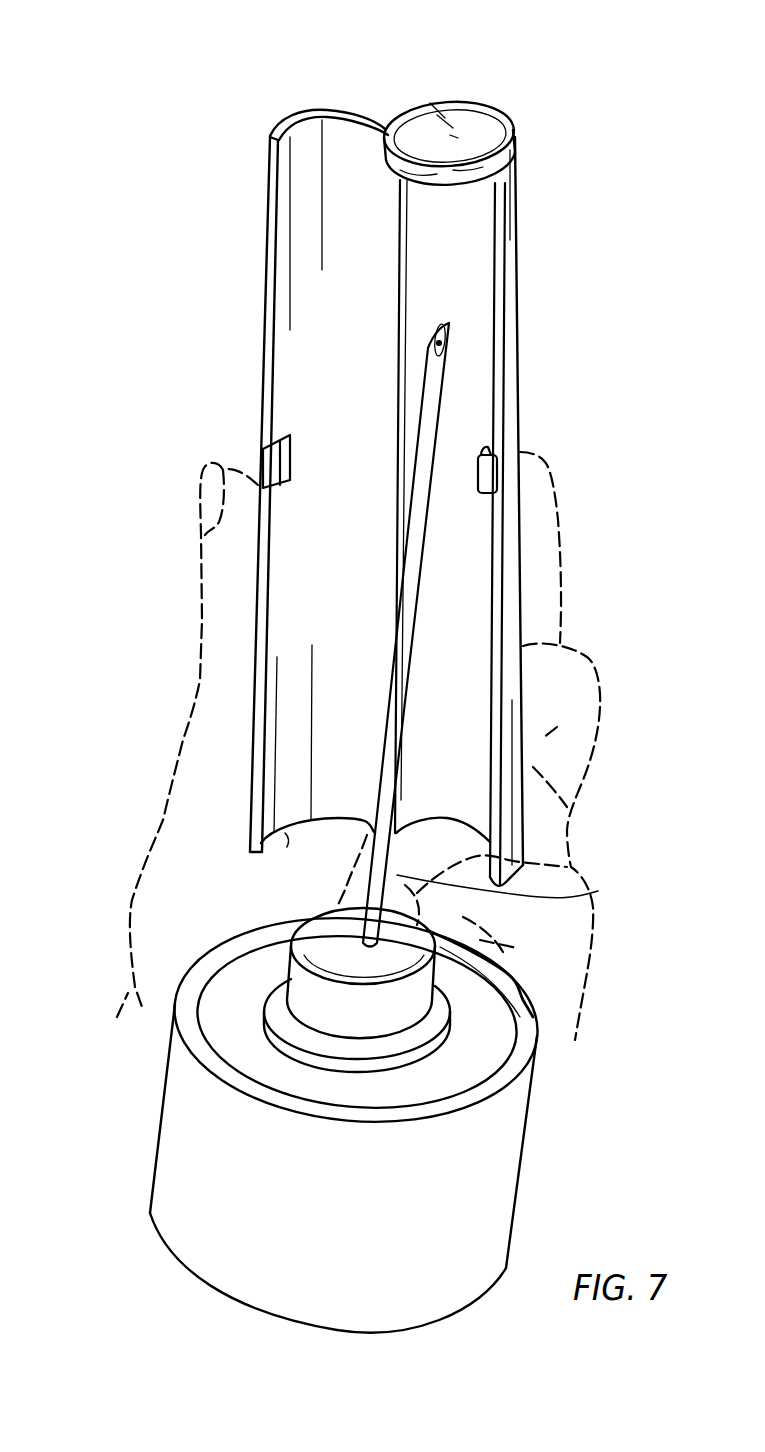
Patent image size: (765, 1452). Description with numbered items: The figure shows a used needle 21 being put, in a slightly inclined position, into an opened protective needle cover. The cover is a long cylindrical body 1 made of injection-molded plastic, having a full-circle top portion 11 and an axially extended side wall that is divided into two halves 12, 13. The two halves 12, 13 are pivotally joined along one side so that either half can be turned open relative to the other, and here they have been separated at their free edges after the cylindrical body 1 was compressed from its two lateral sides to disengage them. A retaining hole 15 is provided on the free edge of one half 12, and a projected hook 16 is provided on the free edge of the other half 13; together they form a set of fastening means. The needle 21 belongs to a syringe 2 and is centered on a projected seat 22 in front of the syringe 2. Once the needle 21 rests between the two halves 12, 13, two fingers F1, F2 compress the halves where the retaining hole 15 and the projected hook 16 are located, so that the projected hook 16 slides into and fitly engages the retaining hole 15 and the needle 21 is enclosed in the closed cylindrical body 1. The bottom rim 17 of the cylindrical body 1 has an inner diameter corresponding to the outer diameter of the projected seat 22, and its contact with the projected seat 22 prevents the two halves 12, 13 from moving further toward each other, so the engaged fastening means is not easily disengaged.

The cylindrical body 1 is at (520, 293).
The syringe 2 is at (178, 1111).
The top portion 11 is at (463, 125).
The half of side wall portion 12 is at (272, 687).
The half of side wall portion 13 is at (523, 713).
The retaining hole 15 is at (263, 452).
The projected hook 16 is at (500, 472).
The bottom rim 17 is at (285, 833).
The needle 21 is at (513, 891).
The projected seat 22 is at (423, 982).
The finger F1 is at (247, 550).
The finger F2 is at (560, 525).